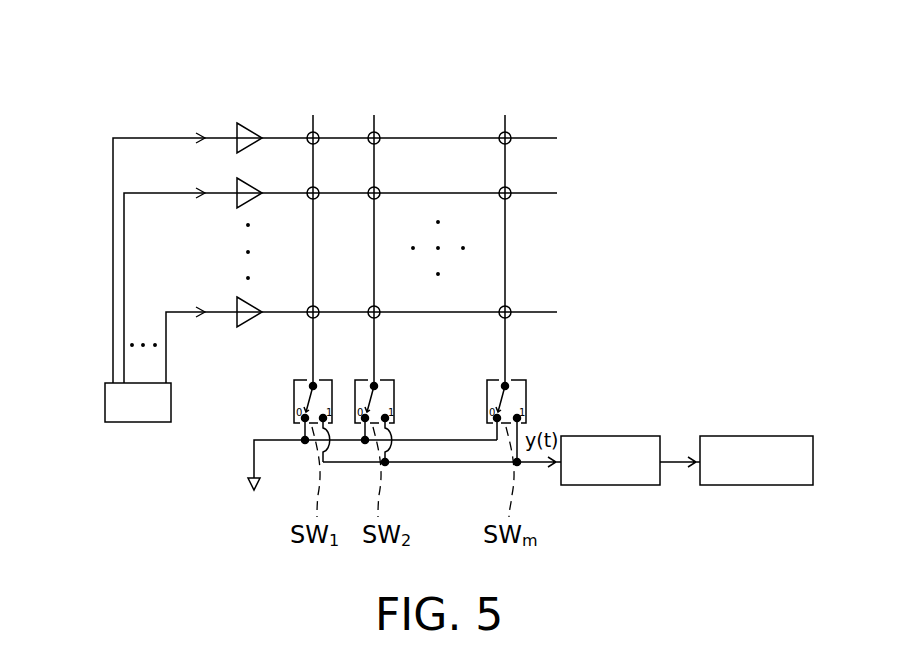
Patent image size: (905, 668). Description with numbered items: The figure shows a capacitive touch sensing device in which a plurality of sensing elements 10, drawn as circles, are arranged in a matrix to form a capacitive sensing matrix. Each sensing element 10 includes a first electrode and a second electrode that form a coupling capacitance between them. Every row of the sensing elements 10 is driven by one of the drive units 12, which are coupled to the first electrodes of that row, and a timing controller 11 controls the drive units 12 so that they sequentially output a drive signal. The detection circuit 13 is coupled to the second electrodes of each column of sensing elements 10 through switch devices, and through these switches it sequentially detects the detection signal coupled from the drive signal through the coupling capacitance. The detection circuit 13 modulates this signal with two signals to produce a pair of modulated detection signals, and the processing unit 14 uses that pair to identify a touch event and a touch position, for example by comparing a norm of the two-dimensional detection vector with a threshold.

The sensing element 10 is at (380, 128).
The timing controller 11 is at (105, 405).
The drive unit 12 is at (243, 123).
The detection circuit 13 is at (610, 485).
The processing unit 14 is at (750, 485).